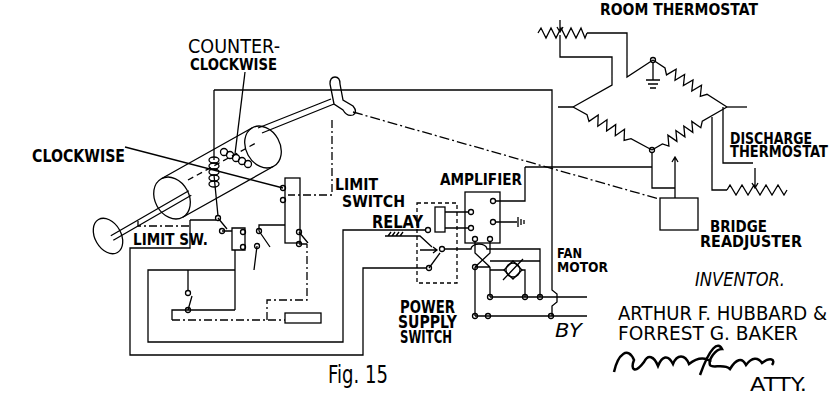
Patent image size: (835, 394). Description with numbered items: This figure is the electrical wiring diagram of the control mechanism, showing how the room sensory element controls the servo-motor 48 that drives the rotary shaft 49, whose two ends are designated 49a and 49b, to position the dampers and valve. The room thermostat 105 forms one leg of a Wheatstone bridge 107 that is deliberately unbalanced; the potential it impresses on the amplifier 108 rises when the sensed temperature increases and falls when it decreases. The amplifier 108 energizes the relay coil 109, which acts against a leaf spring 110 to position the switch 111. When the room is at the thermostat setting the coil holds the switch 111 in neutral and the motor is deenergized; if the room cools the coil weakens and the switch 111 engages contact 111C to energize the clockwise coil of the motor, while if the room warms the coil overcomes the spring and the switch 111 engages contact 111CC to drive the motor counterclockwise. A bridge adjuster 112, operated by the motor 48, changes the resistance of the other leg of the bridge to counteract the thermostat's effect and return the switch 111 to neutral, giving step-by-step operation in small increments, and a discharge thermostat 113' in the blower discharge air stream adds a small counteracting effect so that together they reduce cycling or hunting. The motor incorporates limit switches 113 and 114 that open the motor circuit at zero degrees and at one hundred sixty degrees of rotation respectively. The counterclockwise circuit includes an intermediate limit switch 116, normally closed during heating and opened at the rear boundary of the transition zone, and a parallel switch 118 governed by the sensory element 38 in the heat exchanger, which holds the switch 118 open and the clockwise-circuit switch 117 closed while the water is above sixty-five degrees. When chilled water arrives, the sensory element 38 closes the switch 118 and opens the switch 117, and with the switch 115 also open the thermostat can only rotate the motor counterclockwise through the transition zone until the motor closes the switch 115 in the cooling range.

The sensory element 38 is at (307, 314).
The servo-motor 48 is at (200, 155).
The rotary shaft 49 is at (252, 151).
The shaft end 49a is at (125, 218).
The shaft end 49b is at (290, 124).
The room thermostat 105 is at (595, 55).
The Wheatstone bridge 107 is at (677, 88).
The amplifier 108 is at (491, 226).
The relay coil 109 is at (440, 207).
The leaf spring 110 is at (424, 238).
The switch 111 is at (439, 250).
The contact 111C is at (427, 270).
The contact 111CC is at (431, 229).
The bridge adjuster 112 is at (660, 220).
The limit switch 113 is at (287, 285).
The discharge thermostat 113' is at (765, 163).
The limit switch 114 is at (262, 243).
The switch 115 is at (224, 226).
The intermediate limit switch 116 is at (281, 195).
The switch 117 is at (192, 293).
The switch 118 is at (306, 238).